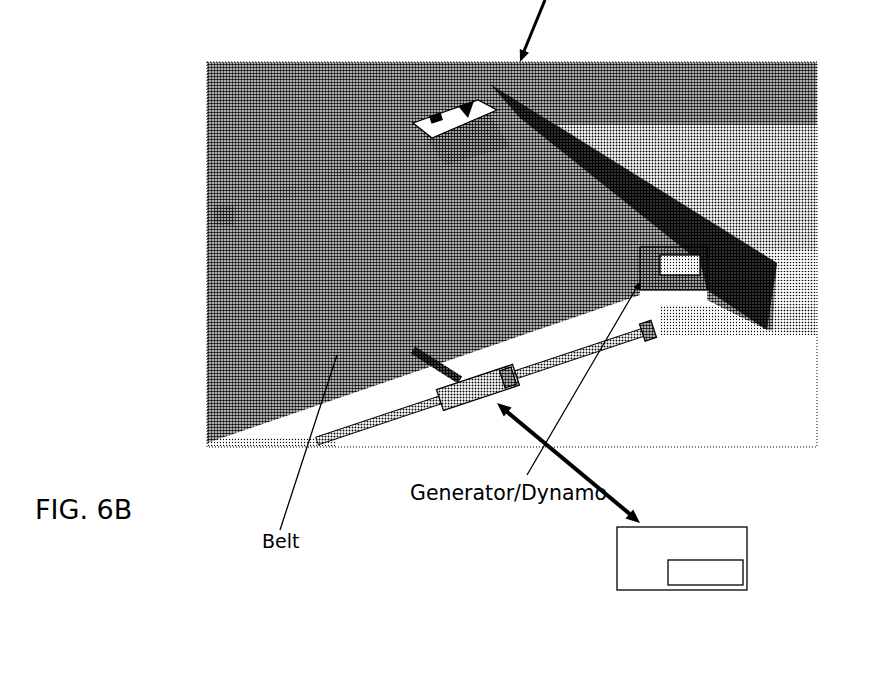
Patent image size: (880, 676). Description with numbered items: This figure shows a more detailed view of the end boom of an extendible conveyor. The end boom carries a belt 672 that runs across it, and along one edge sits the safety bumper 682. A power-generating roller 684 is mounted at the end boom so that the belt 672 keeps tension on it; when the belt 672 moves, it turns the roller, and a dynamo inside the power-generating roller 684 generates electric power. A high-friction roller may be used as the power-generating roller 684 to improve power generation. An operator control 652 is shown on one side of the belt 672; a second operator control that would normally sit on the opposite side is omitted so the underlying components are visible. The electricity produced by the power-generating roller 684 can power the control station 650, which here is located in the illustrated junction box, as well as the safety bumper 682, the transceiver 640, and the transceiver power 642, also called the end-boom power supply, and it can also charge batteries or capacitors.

The transceiver 640 is at (696, 527).
The transceiver power 642 is at (740, 588).
The control station 650 is at (446, 418).
The operator control 652 is at (449, 100).
The belt 672 is at (315, 225).
The safety bumper 682 is at (733, 230).
The power-generating roller 684 is at (648, 290).